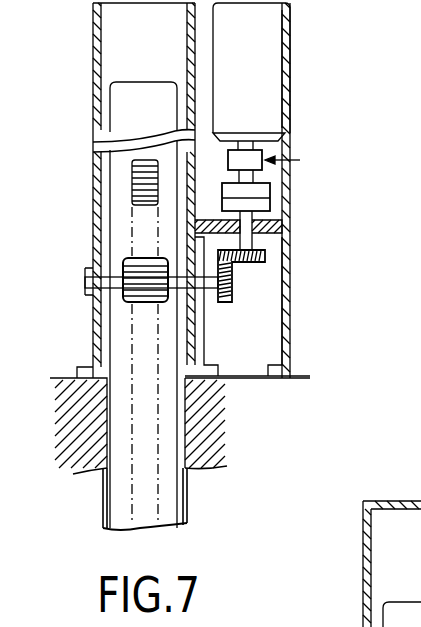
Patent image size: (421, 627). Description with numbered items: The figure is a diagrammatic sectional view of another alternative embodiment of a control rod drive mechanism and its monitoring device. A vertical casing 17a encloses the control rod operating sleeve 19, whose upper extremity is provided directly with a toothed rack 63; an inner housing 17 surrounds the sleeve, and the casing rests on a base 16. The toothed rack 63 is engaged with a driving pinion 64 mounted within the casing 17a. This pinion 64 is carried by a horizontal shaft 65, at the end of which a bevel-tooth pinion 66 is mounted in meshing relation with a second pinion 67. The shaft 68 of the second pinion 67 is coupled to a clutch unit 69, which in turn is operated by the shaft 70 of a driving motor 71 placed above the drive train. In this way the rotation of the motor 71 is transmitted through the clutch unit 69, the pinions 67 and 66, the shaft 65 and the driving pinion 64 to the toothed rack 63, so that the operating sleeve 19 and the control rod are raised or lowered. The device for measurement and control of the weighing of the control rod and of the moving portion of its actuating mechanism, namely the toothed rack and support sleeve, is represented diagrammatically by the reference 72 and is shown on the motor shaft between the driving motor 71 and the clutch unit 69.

The flange / base plate 16 is at (82, 397).
The inner shaft housing 17 is at (98, 118).
The casing 17a is at (93, 62).
The control rod operating sleeve 19 is at (178, 520).
The toothed rack 63 is at (132, 190).
The driving pinion 64 is at (135, 258).
The shaft 65 is at (213, 300).
The bevel-tooth pinion 66 is at (232, 292).
The second pinion 67 is at (262, 258).
The shaft 68 is at (282, 225).
The clutch unit 69 is at (270, 205).
The shaft 70 is at (258, 197).
The driving motor 71 is at (251, 72).
The device for measurement and control of weighing 72 is at (250, 157).